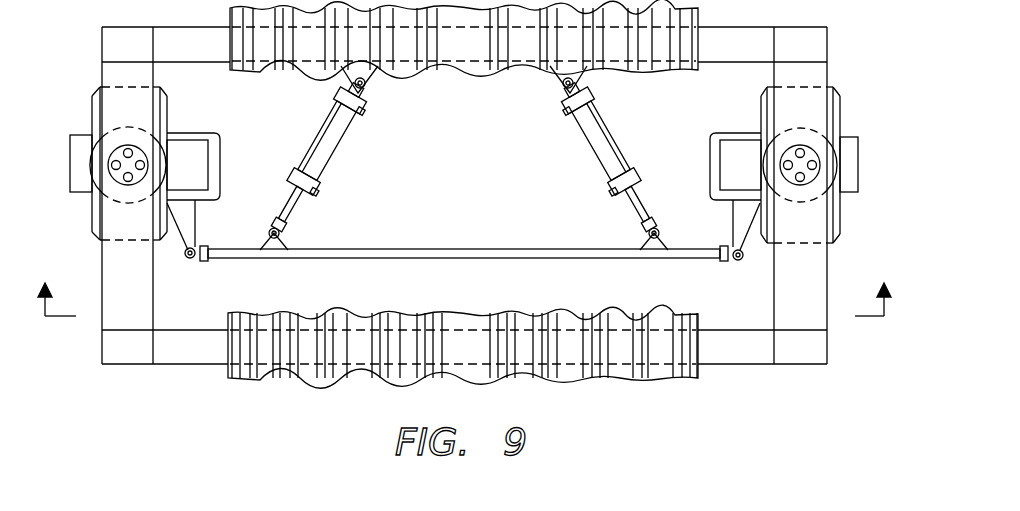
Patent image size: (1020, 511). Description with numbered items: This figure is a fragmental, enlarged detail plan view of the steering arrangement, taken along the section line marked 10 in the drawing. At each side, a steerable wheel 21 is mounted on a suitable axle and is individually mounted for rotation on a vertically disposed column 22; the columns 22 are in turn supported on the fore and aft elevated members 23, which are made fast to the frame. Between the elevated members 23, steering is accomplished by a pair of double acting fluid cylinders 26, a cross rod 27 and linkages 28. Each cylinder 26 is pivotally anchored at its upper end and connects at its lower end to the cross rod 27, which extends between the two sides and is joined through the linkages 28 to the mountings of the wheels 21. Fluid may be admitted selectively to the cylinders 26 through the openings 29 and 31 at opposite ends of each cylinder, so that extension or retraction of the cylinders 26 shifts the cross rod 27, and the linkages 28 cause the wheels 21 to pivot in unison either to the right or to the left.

The roller apparatus 10 is at (470, 287).
The steerable wheels 21 is at (90, 97).
The vertically disposed columns 22 is at (108, 183).
The fore and aft elevated members 23 is at (135, 100).
The double acting fluid cylinders 26 is at (348, 153).
The cross rod 27 is at (446, 250).
The linkages 28 is at (187, 262).
The openings 29 is at (318, 195).
The openings 31 is at (365, 113).